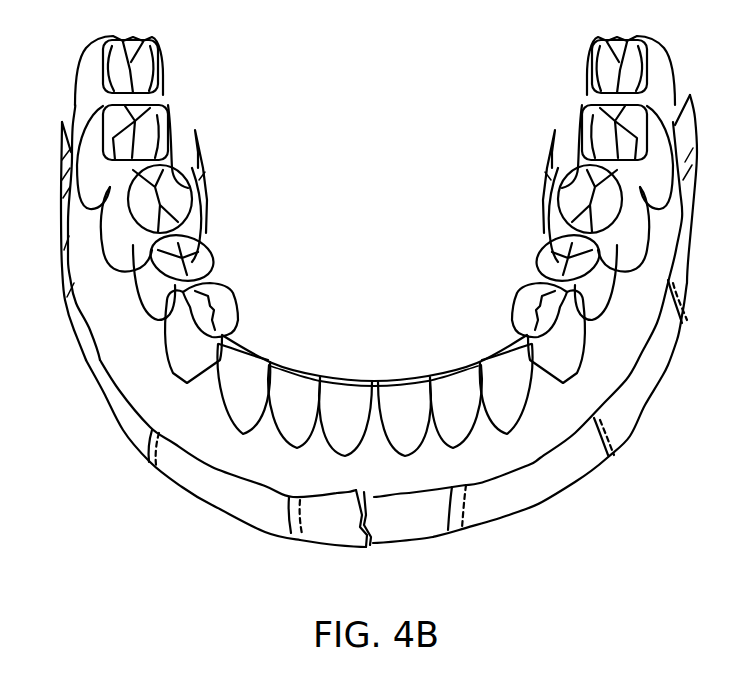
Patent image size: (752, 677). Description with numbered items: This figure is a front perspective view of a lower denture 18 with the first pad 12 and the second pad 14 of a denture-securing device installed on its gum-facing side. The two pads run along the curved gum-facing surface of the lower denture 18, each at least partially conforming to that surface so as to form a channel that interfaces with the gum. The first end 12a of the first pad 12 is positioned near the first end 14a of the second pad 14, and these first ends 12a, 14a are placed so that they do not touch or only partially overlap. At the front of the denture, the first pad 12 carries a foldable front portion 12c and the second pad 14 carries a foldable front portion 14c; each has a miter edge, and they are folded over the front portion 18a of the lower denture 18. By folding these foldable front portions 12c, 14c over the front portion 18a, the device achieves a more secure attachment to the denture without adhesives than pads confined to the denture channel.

The lower denture 18 is at (112, 309).
The first pad 12 is at (121, 433).
The second pad 14 is at (632, 430).
The first end of the first pad 12a is at (318, 530).
The first end of the second pad 14a is at (420, 530).
The foldable front portion of the first pad 12c is at (342, 497).
The foldable front portion of the second pad 14c is at (380, 502).
The front portion of the lower denture 18a is at (368, 540).